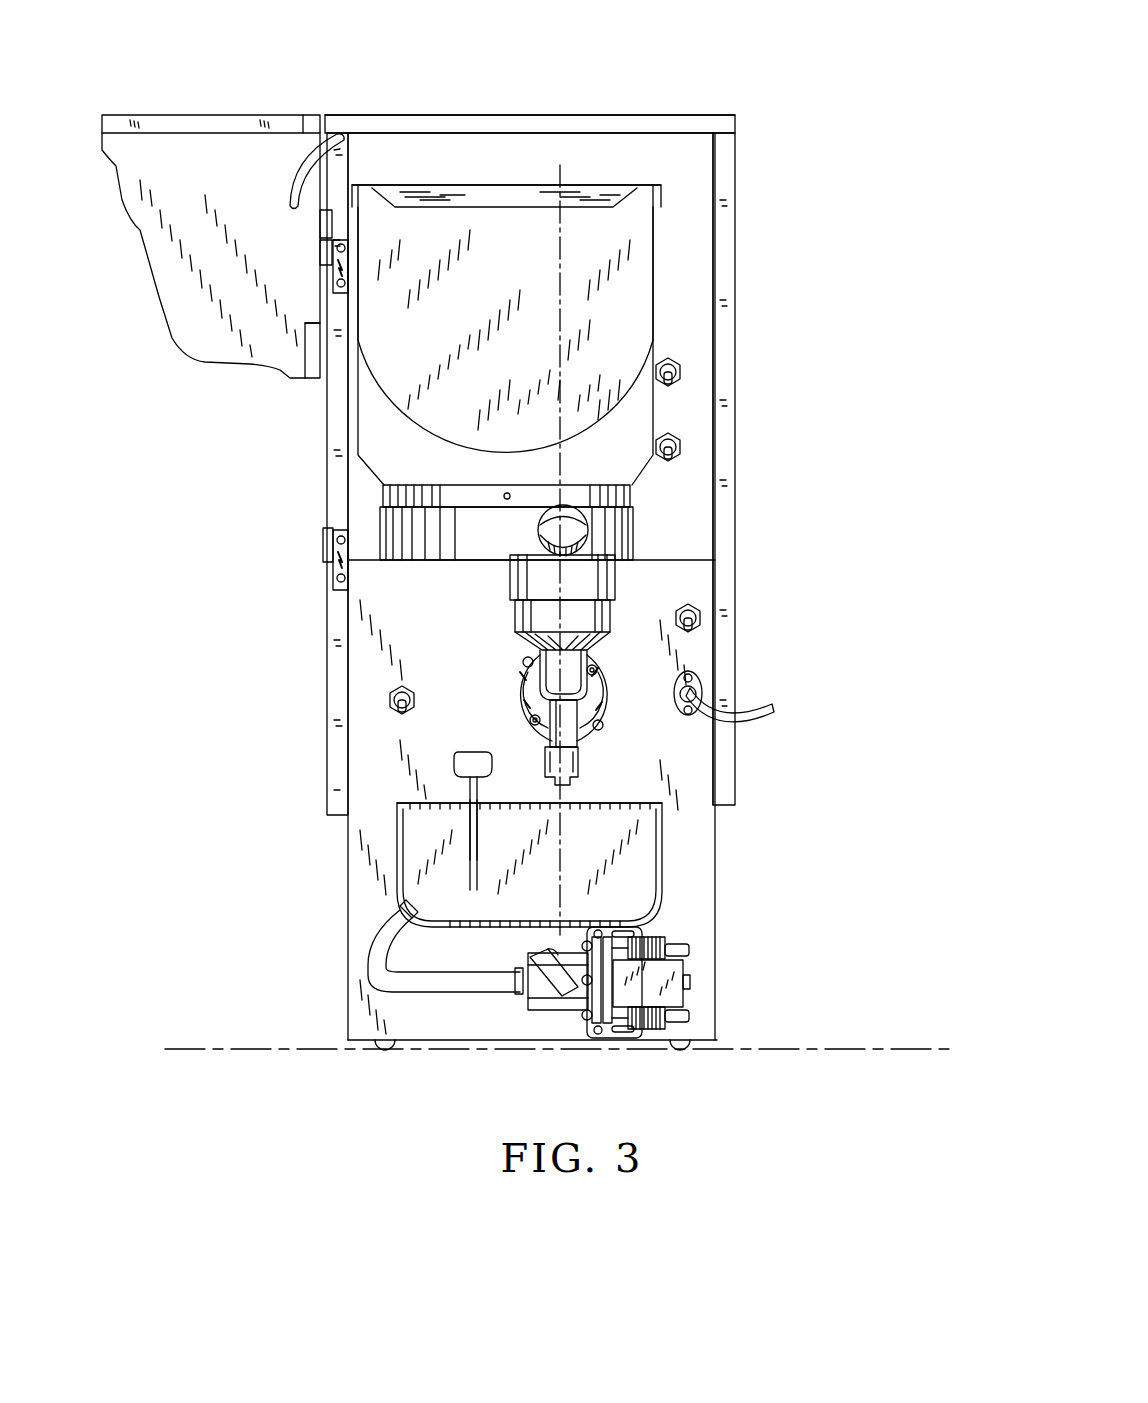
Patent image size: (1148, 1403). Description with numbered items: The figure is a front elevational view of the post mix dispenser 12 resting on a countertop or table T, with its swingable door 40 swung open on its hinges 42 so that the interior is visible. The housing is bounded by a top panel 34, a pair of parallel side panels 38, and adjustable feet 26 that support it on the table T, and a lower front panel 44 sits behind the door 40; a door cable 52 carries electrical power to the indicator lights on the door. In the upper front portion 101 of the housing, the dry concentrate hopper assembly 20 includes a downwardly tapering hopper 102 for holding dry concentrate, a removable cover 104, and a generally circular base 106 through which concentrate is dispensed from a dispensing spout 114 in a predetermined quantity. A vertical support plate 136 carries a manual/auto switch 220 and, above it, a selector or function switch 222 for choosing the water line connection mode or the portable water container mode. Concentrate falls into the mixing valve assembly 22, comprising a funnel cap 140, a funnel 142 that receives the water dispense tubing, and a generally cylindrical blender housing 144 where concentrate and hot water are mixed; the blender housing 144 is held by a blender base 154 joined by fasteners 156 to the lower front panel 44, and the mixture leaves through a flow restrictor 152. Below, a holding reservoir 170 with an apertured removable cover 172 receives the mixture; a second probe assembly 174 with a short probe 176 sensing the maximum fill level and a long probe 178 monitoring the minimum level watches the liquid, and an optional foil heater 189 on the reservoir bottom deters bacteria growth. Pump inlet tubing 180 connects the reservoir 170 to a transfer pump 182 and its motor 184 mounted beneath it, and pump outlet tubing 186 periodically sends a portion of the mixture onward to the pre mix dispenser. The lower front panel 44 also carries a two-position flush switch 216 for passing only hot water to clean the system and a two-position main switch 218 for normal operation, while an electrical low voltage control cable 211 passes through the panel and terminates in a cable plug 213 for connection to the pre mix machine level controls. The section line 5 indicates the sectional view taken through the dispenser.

The post mix dispenser 12 is at (697, 71).
The top panel 34 is at (397, 122).
The upper front portion 101 is at (650, 146).
The removable cover 104 is at (523, 190).
The section line 5 is at (560, 165).
The door cable 52 is at (302, 168).
The side panels 38 is at (728, 219).
The swingable door 40 is at (172, 333).
The hinges 42 is at (348, 282).
The vertical support plate 136 is at (690, 300).
The hopper 102 is at (360, 420).
The selector or function switch 222 is at (668, 386).
The manual/auto switch 220 is at (668, 461).
The base 106 is at (457, 488).
The dispensing spout 114 is at (538, 528).
The dry concentrate hopper assembly 20 is at (280, 494).
The funnel 142 is at (513, 607).
The funnel cap 140 is at (617, 572).
The main switch 218 is at (700, 608).
The blender housing 144 is at (548, 684).
The fasteners 156 is at (596, 670).
The blender base 154 is at (605, 690).
The cable plug 213 is at (700, 688).
The flush switch 216 is at (390, 690).
The second probe assembly 174 is at (460, 760).
The flow restrictor 152 is at (583, 762).
The electrical low voltage control cable 211 is at (766, 712).
The mixing valve assembly 22 is at (675, 737).
The removable cover 172 is at (632, 806).
The short probe 176 is at (480, 816).
The lower front panel 44 is at (370, 862).
The long probe 178 is at (468, 856).
The holding reservoir 170 is at (665, 870).
The pump inlet tubing 180 is at (388, 948).
The foil heater 189 is at (505, 924).
The motor 184 is at (683, 997).
The pump outlet tubing 186 is at (550, 985).
The transfer pump 182 is at (552, 1010).
The adjustable feet 26 is at (383, 1050).
The table T is at (255, 1048).